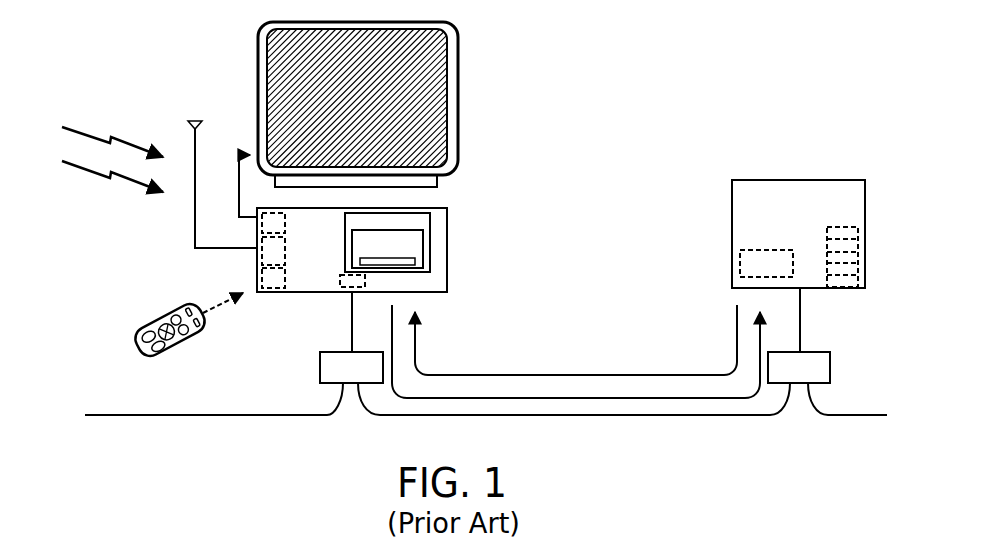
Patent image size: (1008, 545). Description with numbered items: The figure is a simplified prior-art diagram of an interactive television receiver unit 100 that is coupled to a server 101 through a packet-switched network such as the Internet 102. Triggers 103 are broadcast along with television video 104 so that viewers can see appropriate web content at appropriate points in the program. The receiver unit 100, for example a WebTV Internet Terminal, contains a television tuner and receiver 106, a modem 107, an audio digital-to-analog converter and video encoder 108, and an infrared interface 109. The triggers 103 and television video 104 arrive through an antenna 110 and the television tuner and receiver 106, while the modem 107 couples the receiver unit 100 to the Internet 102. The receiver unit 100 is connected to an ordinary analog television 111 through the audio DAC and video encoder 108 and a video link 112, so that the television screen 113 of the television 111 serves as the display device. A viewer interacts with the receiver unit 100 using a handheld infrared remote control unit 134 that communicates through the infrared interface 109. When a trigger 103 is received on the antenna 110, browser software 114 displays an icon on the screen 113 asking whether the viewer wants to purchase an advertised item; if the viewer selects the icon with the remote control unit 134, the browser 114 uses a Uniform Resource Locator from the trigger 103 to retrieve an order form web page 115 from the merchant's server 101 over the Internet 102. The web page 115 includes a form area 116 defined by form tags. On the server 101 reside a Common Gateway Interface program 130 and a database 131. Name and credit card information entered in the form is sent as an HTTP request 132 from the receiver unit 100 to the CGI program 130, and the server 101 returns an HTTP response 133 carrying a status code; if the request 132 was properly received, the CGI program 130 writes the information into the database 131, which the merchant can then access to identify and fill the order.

The interactive television receiver unit 100 is at (328, 258).
The server 101 is at (812, 228).
The Internet 102 is at (268, 416).
The triggers 103 is at (100, 181).
The television video 104 is at (133, 143).
The television tuner and receiver 106 is at (257, 254).
The modem 107 is at (340, 279).
The audio digital-to-analog converter and video encoder 108 is at (285, 223).
The infrared interface 109 is at (285, 277).
The antenna 110 is at (193, 203).
The analog television 111 is at (458, 121).
The video link 112 is at (238, 179).
The television screen 113 is at (415, 76).
The browser software 114 is at (430, 240).
The order form web page 115 is at (423, 253).
The form area 116 is at (415, 263).
The CGI program 130 is at (740, 271).
The database 131 is at (858, 268).
The HTTP request 132 is at (394, 352).
The HTTP response 133 is at (737, 333).
The infrared remote control unit 134 is at (178, 305).